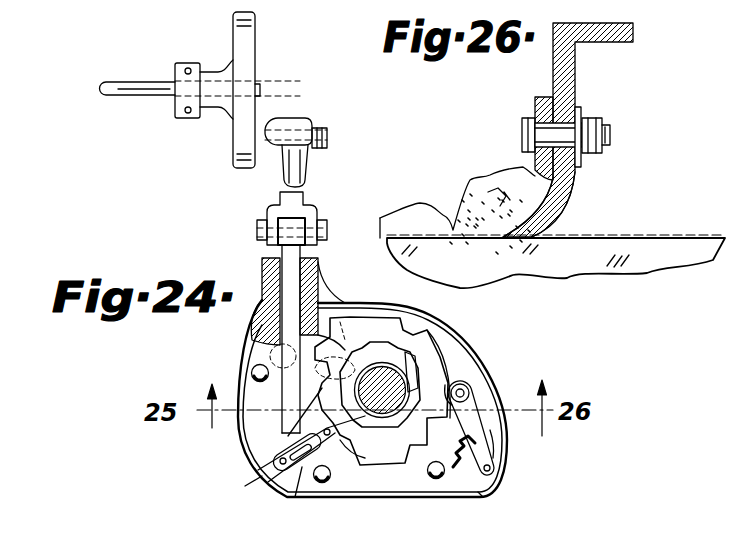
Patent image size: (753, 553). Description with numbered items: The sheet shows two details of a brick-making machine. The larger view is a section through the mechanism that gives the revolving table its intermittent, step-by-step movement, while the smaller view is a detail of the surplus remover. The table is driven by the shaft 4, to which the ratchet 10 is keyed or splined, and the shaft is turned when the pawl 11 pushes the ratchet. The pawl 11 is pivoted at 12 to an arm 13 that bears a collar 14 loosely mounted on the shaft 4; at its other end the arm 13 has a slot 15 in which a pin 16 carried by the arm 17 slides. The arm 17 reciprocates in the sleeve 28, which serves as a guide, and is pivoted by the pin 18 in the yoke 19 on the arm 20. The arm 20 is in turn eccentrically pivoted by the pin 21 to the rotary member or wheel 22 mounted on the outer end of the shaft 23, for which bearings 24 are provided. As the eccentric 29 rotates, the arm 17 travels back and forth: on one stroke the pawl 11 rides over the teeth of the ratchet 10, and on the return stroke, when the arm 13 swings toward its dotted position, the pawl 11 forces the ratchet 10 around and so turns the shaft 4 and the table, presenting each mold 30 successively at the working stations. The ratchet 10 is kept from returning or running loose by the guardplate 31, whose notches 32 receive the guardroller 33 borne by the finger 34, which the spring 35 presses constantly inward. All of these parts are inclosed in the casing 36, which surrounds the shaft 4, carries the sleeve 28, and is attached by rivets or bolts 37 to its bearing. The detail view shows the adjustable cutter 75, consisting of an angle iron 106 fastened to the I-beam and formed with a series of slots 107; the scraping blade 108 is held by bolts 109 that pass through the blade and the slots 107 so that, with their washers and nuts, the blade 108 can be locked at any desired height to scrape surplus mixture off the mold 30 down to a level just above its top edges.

In FIG. 24, the shaft 4 is at (393, 387).
In FIG. 24, the ratchet 10 is at (407, 409).
In FIG. 24, the pawl 11 is at (300, 420).
In FIG. 24, the pivot 12 is at (347, 455).
In FIG. 24, the arm 13 is at (363, 428).
In FIG. 24, the collar 14 is at (410, 364).
In FIG. 24, the slot 15 is at (295, 497).
In FIG. 24, the pin 16 is at (278, 464).
In FIG. 24, the arm 17 is at (293, 398).
In FIG. 24, the pin 18 is at (257, 233).
In FIG. 24, the yoke 19 is at (306, 219).
In FIG. 24, the arm 20 is at (292, 173).
In FIG. 24, the pin 21 is at (328, 141).
In FIG. 24, the rotary member or wheel 22 is at (247, 60).
In FIG. 24, the shaft 23 is at (122, 90).
In FIG. 24, the bearings 24 is at (185, 90).
In FIG. 24, the sleeve 28 is at (318, 283).
In FIG. 24, the eccentric 29 is at (263, 137).
In FIG. 26, the mold 30 is at (552, 227).
In FIG. 24, the guardplate 31 is at (381, 391).
In FIG. 24, the notches 32 is at (413, 332).
In FIG. 24, the guardroller 33 is at (470, 385).
In FIG. 24, the finger 34 is at (490, 428).
In FIG. 24, the spring 35 is at (483, 493).
In FIG. 24, the casing 36 is at (510, 468).
In FIG. 24, the rivets or bolts 37 is at (253, 367).
In FIG. 26, the adjustable cutter 75 is at (547, 130).
In FIG. 26, the angle iron 106 is at (562, 65).
In FIG. 26, the slots 107 is at (585, 160).
In FIG. 26, the scraping blade 108 is at (537, 222).
In FIG. 26, the bolts 109 is at (535, 115).